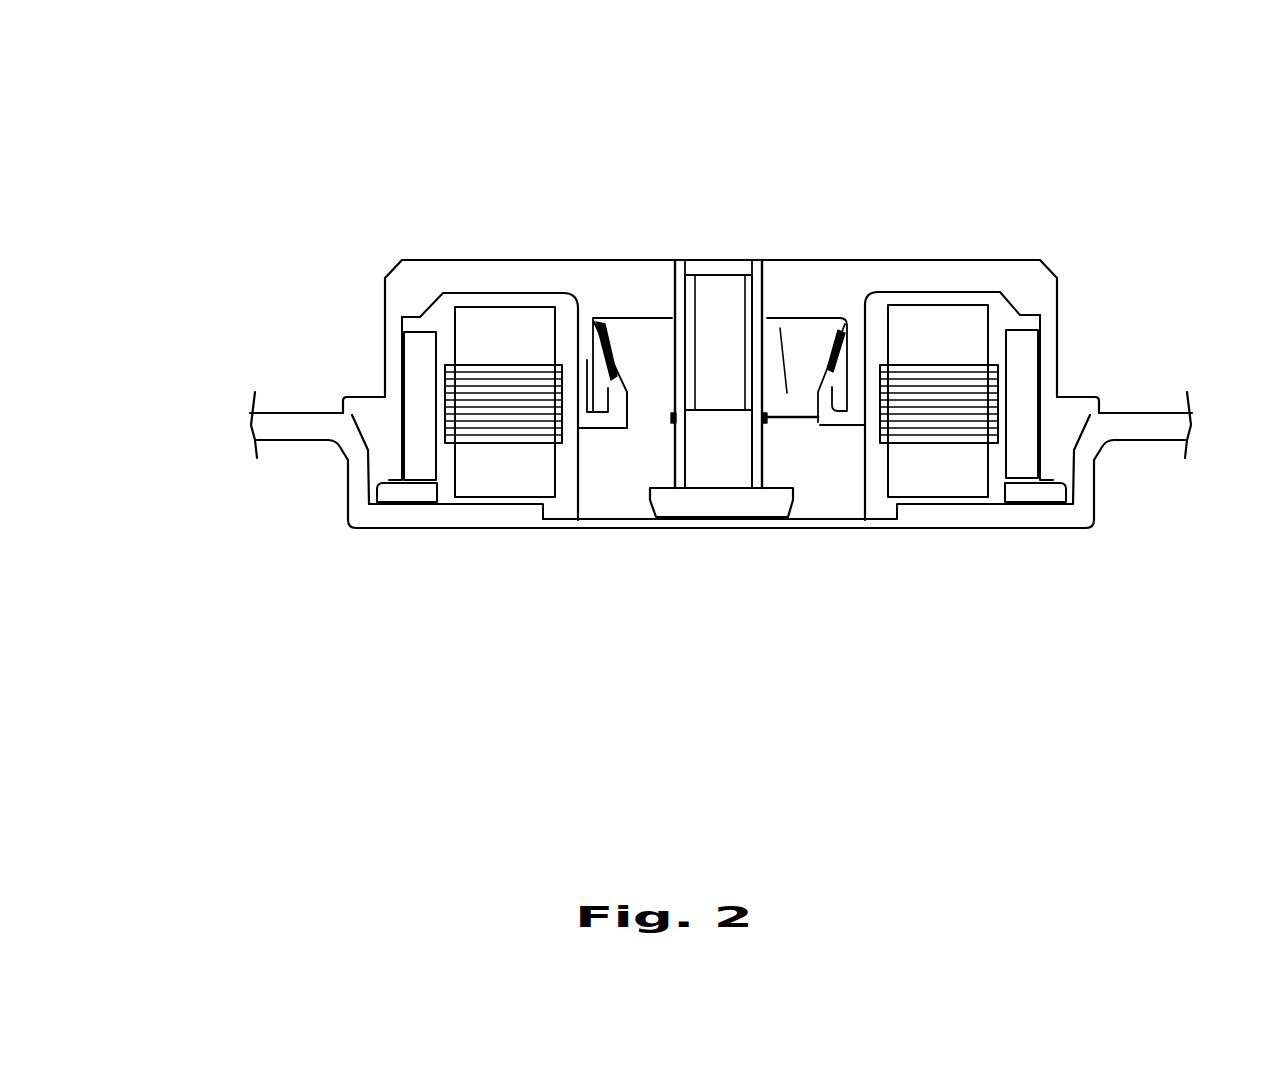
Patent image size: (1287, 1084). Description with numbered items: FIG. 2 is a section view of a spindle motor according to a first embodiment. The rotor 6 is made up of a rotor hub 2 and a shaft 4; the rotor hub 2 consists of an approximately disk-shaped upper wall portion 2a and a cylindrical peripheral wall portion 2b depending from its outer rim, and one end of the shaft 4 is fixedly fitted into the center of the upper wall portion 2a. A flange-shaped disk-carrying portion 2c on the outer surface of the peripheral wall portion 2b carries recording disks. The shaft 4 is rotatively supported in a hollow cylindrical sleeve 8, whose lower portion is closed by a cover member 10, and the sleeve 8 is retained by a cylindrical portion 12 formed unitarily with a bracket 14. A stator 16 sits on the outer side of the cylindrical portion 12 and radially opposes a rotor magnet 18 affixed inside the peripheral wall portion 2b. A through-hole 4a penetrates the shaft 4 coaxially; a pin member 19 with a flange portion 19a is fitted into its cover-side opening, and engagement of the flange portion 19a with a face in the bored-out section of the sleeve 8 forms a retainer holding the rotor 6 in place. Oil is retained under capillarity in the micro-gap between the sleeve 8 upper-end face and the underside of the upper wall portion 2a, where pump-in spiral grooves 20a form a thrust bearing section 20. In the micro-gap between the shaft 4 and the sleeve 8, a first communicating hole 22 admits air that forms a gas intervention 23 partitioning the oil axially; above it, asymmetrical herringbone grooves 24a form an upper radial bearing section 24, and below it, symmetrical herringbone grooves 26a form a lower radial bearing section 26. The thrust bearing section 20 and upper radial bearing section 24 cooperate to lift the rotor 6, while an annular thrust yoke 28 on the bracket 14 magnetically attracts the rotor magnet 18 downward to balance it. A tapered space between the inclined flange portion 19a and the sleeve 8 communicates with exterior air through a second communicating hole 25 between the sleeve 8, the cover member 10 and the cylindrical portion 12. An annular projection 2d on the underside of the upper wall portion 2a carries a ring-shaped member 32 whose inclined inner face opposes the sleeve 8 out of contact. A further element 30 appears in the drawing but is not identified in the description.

The rotor hub 2 is at (1032, 258).
The upper wall portion 2a is at (900, 268).
The peripheral wall portion 2b is at (385, 367).
The disk-carrying portion 2c is at (342, 400).
The annular projection 2d is at (583, 370).
The shaft 4 is at (678, 283).
The through-hole 4a is at (722, 318).
The rotor 6 is at (712, 257).
The sleeve 8 is at (668, 430).
The cover member 10 is at (776, 517).
The cylindrical portion 12 is at (628, 440).
The bracket 14 is at (340, 445).
The stator 16 is at (490, 338).
The rotor magnet 18 is at (422, 367).
The pin member 19 is at (725, 462).
The flange portion 19a is at (665, 480).
The thrust bearing section 20 is at (777, 352).
The spiral grooves 20a is at (527, 372).
The first communicating hole 22 is at (818, 419).
The gas intervention 23 is at (660, 463).
The upper radial bearing section 24 is at (773, 353).
The herringbone grooves 24a is at (660, 365).
The second communicating hole 25 is at (847, 528).
The lower radial bearing section 26 is at (766, 460).
The herringbone grooves 26a is at (663, 415).
The thrust yoke 28 is at (405, 493).
The housing floor 30 is at (575, 465).
The ring-shaped member 32 is at (840, 393).